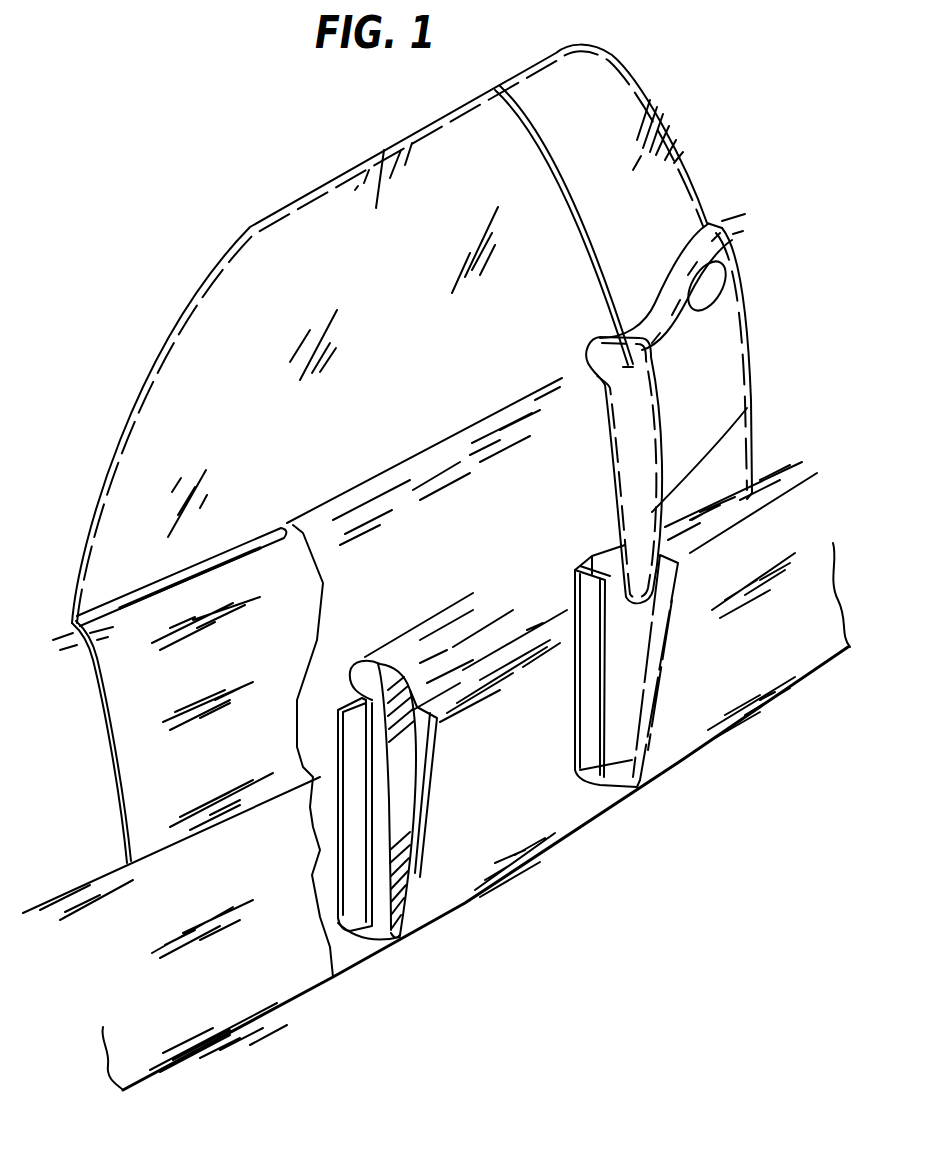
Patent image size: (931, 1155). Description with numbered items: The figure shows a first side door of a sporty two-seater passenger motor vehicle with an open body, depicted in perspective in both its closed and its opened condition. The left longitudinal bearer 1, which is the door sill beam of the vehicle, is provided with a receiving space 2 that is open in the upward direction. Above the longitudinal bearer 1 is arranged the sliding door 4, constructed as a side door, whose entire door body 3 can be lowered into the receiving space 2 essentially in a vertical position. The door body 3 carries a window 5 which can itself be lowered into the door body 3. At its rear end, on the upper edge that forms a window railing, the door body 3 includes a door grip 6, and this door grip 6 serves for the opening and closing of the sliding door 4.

The longitudinal bearer 1 is at (248, 1000).
The receiving space 2 is at (642, 690).
The door body 3 is at (742, 370).
The sliding door 4 is at (712, 186).
The window 5 is at (272, 242).
The door grip 6 is at (730, 247).